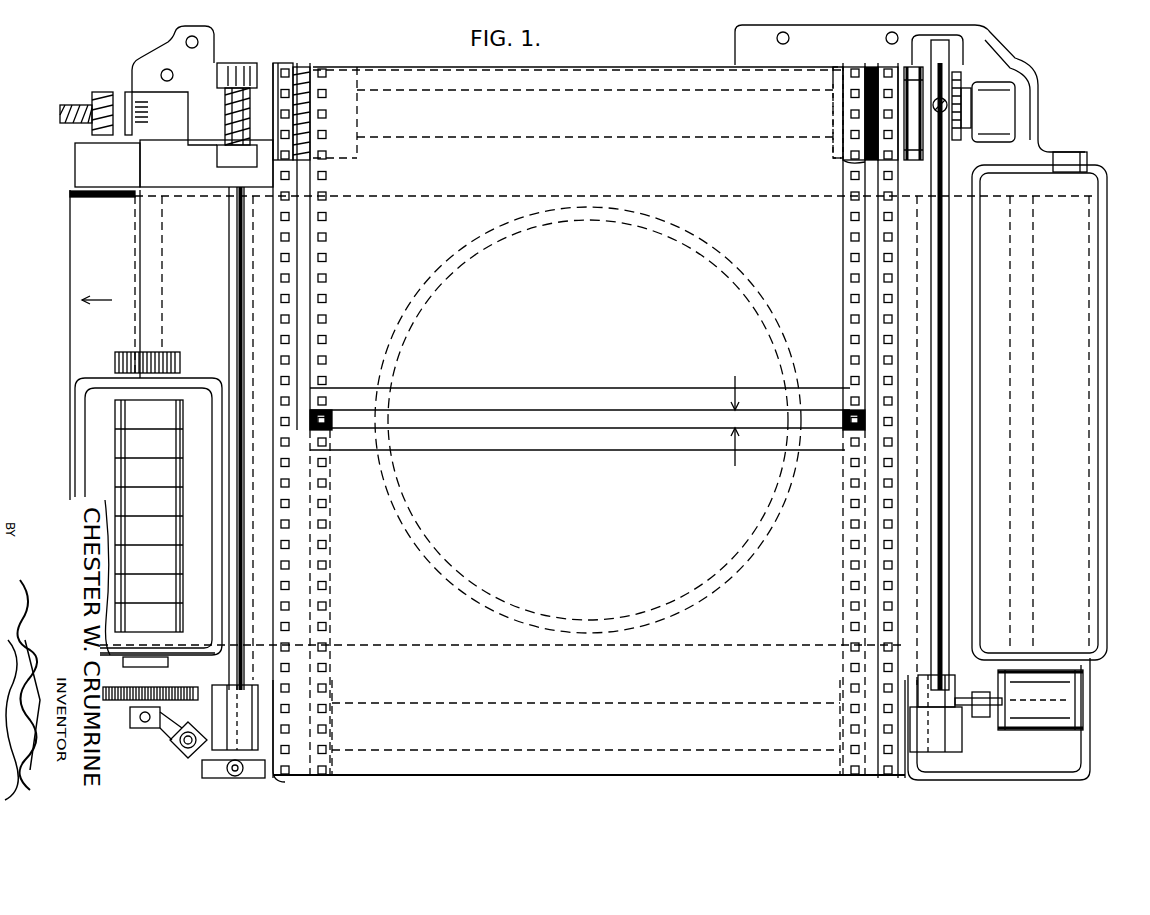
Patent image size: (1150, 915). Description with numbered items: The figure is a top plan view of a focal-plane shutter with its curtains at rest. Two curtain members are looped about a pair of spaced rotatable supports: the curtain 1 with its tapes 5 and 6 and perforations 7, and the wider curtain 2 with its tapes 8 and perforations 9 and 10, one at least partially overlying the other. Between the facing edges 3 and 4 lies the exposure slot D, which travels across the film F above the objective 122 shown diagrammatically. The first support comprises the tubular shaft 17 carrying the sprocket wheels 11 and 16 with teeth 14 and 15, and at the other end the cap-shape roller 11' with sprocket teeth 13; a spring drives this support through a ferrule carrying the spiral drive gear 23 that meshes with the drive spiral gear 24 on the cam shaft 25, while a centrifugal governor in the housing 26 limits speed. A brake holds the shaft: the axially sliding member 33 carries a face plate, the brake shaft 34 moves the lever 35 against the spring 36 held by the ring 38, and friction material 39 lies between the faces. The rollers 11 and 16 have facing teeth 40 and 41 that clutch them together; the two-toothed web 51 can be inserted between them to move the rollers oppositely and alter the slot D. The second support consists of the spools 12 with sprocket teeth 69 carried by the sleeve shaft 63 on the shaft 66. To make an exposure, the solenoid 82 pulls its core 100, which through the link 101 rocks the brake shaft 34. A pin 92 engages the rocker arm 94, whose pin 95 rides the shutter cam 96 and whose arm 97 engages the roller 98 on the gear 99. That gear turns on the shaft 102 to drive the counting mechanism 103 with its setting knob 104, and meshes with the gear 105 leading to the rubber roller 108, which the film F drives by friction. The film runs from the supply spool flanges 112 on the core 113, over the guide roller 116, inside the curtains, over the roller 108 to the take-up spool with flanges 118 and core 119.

The curtain 1 is at (523, 372).
The curtain 2 is at (524, 488).
The curtain edge 3 is at (652, 410).
The curtain edge 4 is at (650, 430).
The tape 5 is at (332, 412).
The tape 6 is at (848, 412).
The perforations 7 is at (326, 320).
The tapes 8 is at (318, 290).
The perforations 9 is at (322, 256).
The perforations 10 is at (333, 603).
The sprocket wheel 11 is at (815, 99).
The cap-shape roller 11' is at (328, 95).
The spools 12 is at (283, 782).
The sprocket teeth 13 is at (287, 62).
The teeth 14 is at (855, 68).
The teeth 15 is at (888, 68).
The sprocket wheel 16 is at (855, 170).
The tubular shaft 17 is at (547, 137).
The spiral drive gear 23 is at (237, 62).
The drive spiral gear 24 is at (250, 100).
The cam shaft 25 is at (228, 281).
The governor housing 26 is at (216, 152).
The axially sliding member 33 is at (960, 78).
The brake shaft 34 is at (943, 296).
The lever 35 is at (970, 90).
The spring 36 is at (1005, 78).
The ring 38 is at (1012, 98).
The friction material 39 is at (915, 160).
The facing teeth 40 is at (866, 108).
The facing teeth 41 is at (866, 94).
The toothed member 51 is at (866, 128).
The sleeve shaft 63 is at (500, 703).
The shaft 66 is at (262, 686).
The sprocket teeth 69 is at (290, 705).
The solenoid 82 is at (1032, 730).
The pin 92 is at (180, 758).
The rocker arm 94 is at (175, 745).
The pin 95 is at (242, 776).
The shutter cam 96 is at (210, 770).
The arm 97 is at (150, 728).
The roller 98 is at (135, 728).
The gear 99 is at (194, 690).
The core 100 is at (990, 718).
The link 101 is at (963, 722).
The shaft 102 is at (172, 642).
The counting mechanism 103 is at (118, 474).
The counter-setting knob 104 is at (172, 351).
The gear 105 is at (108, 700).
The rubber roller 108 is at (70, 193).
The flanges 112 is at (1026, 196).
The core 113 is at (1010, 408).
The guide roller 116 is at (1085, 168).
The flanges 118 is at (330, 196).
The spool core 119 is at (165, 238).
The objective 122 is at (722, 578).
The exposure slot D is at (734, 411).
The film F is at (73, 278).